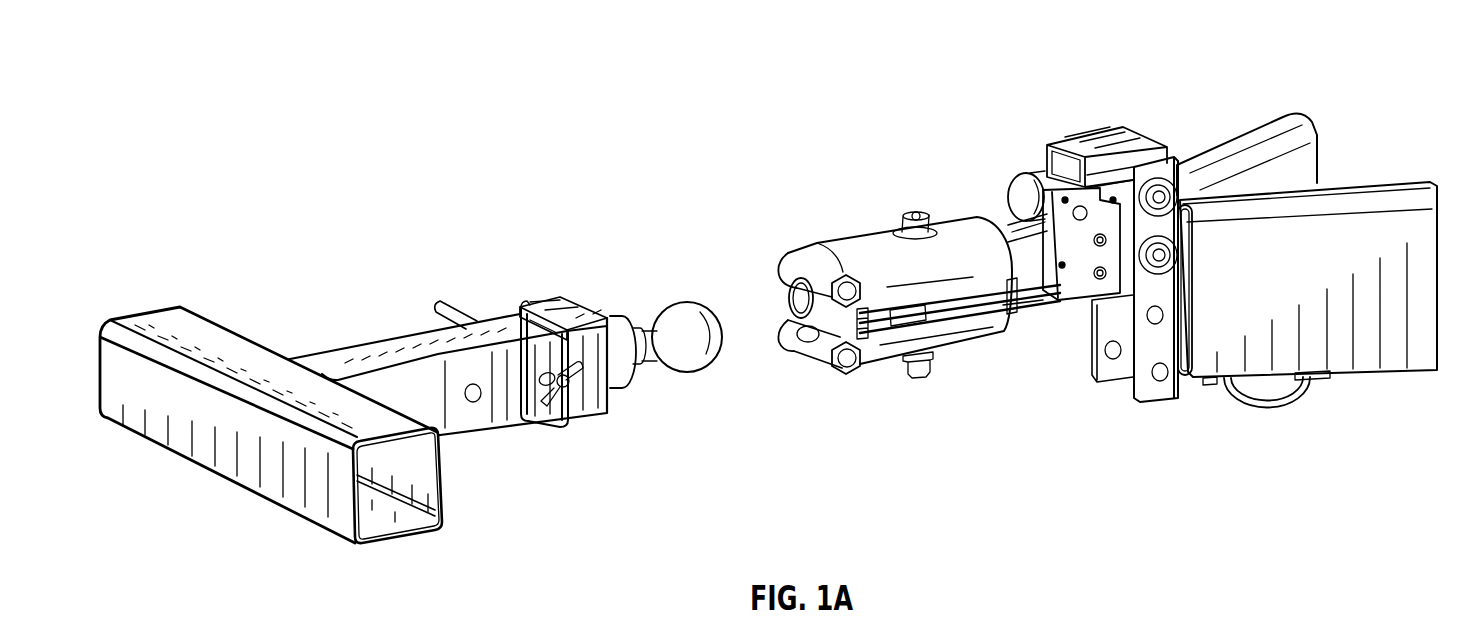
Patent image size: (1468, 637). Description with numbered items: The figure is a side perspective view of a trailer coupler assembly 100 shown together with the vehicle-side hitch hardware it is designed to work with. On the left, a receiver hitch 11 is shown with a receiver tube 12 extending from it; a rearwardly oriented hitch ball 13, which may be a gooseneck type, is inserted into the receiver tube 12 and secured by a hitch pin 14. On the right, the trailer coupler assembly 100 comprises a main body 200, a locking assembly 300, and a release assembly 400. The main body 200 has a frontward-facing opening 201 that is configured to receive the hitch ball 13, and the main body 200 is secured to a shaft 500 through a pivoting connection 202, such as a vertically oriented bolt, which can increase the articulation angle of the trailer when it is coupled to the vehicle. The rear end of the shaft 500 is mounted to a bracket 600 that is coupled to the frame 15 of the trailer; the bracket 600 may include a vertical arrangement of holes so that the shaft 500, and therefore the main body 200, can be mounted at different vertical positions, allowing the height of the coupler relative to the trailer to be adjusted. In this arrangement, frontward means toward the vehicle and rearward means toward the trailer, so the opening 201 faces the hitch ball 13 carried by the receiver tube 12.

The trailer coupler assembly 100 is at (259, 124).
The receiver hitch 11 is at (203, 322).
The receiver tube 12 is at (500, 322).
The hitch ball 13 is at (685, 391).
The hitch pin 14 is at (576, 394).
The frame 15 is at (1250, 133).
The main body 200 is at (872, 242).
The frontward-facing opening 201 is at (785, 312).
The pivoting connection 202 is at (938, 381).
The locking assembly 300 is at (848, 362).
The release assembly 400 is at (1024, 141).
The shaft 500 is at (1005, 230).
The bracket 600 is at (1173, 414).